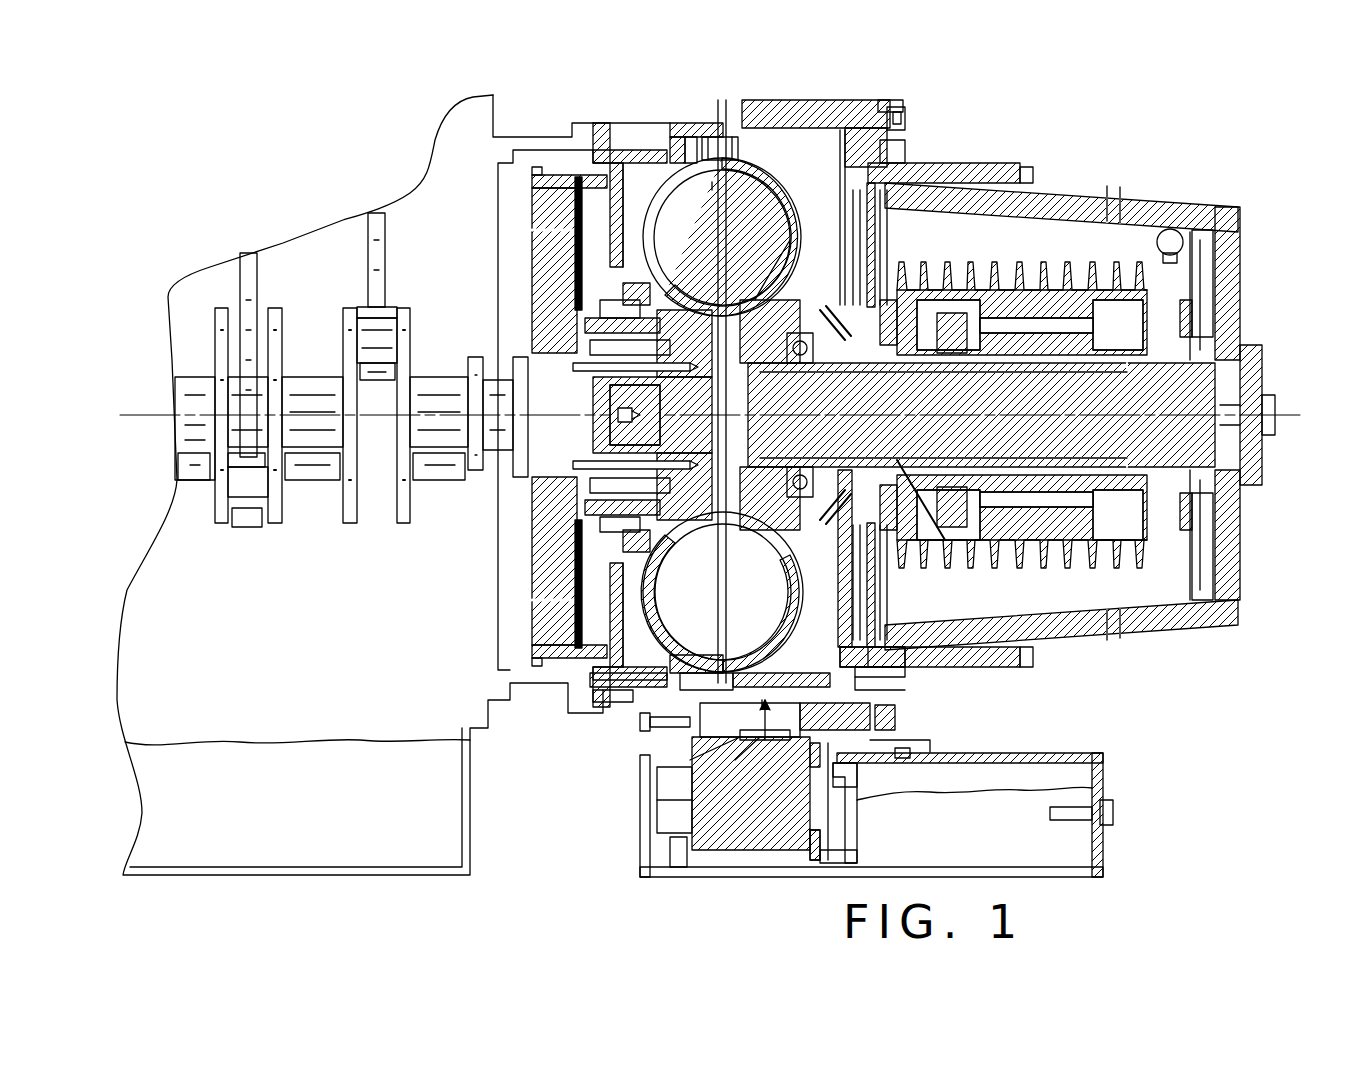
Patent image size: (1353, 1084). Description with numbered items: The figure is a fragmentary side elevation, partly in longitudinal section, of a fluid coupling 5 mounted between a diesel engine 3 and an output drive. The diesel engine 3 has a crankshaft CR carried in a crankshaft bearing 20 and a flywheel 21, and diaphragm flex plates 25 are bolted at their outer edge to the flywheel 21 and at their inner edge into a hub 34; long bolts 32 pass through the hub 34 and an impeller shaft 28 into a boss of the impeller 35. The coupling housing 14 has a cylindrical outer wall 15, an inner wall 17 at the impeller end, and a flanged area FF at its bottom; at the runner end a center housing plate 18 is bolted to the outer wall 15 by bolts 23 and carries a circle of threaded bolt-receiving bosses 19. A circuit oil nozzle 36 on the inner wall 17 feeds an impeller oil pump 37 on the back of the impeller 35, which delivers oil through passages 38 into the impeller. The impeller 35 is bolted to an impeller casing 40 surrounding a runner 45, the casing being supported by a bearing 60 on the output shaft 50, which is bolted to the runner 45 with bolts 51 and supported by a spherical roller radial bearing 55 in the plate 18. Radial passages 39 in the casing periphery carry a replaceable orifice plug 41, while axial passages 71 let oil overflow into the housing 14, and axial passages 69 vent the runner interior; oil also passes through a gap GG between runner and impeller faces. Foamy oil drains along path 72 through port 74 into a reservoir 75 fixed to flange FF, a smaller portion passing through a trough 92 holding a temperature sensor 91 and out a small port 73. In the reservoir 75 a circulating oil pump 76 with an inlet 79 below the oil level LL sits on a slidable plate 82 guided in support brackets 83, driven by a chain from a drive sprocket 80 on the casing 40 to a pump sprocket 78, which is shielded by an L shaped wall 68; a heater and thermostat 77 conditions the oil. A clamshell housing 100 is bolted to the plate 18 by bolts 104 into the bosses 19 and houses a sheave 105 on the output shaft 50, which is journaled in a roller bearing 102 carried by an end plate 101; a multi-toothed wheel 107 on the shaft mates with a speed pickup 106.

The diesel engine 3 is at (470, 96).
The crankshaft CR is at (212, 515).
The crankshaft bearing 20 is at (425, 520).
The impeller shaft 28 is at (522, 527).
The flywheel 21 is at (556, 175).
The hub 34 is at (560, 562).
The inner wall 17 is at (648, 182).
The diaphragm flex plates 25 is at (600, 700).
The impeller 35 is at (670, 130).
The orifice plug 41 is at (722, 140).
The radial passages 39 is at (730, 137).
The impeller casing 40 is at (758, 165).
The runner 45 is at (780, 180).
The gap GG is at (712, 190).
The bearing 60 is at (800, 248).
The passages 38 is at (712, 520).
The bolts 51 is at (740, 498).
The axial passages 69 is at (773, 310).
The long bolts 32 is at (605, 337).
The impeller oil pump 37 is at (595, 265).
The circuit oil nozzle 36 is at (585, 297).
The housing 14 is at (768, 100).
The fluid coupling 5 is at (818, 100).
The outer wall 15 is at (878, 103).
The bolts 23 is at (905, 114).
The center housing plate 18 is at (900, 143).
The bolt-receiving bosses 19 is at (920, 165).
The bolts 104 is at (1010, 163).
The drive sprocket 80 is at (833, 300).
The axial passages 71 is at (878, 540).
The roller bearing 102 is at (1262, 470).
The clamshell housing 100 is at (1092, 186).
The end plate 101 is at (1240, 568).
The speed pickup 106 is at (1183, 240).
The multi-toothed wheel 107 is at (1175, 300).
The output shaft 50 is at (927, 290).
The sheave 105 is at (1012, 272).
The spherical roller radial bearing 55 is at (940, 500).
The path 72 is at (880, 689).
The flanged area FF is at (902, 755).
The trough 92 is at (660, 752).
The temperature sensor 91 is at (660, 726).
The slidable plate 82 is at (762, 745).
The circulating oil pump 76 is at (740, 830).
The small port 73 is at (660, 775).
The port 74 is at (670, 830).
The inlet 79 is at (675, 870).
The pump sprocket 78 is at (850, 840).
The L shaped wall 68 is at (847, 860).
The support brackets 83 is at (845, 770).
The reservoir 75 is at (1003, 755).
The oil level LL is at (1058, 785).
The heater and thermostat 77 is at (1115, 812).